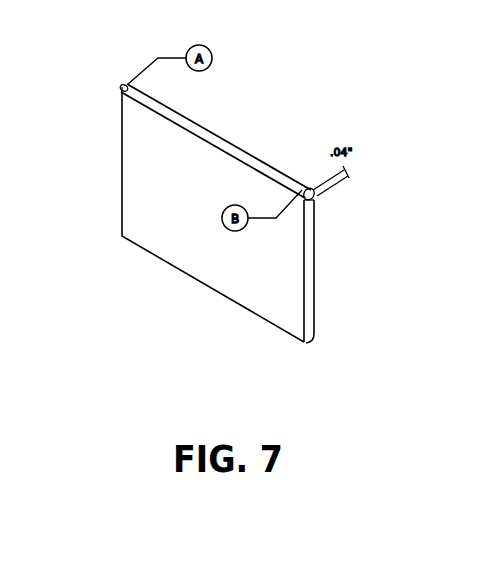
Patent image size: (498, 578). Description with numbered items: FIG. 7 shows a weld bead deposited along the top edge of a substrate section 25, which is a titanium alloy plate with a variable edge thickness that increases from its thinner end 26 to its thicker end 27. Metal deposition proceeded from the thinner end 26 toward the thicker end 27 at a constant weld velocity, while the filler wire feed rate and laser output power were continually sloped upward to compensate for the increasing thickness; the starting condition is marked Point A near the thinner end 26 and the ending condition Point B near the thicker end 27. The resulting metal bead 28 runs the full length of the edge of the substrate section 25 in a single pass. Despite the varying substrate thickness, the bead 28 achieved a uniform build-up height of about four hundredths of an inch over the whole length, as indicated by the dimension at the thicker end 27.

The substrate section 25 is at (140, 173).
The thinner end 26 is at (128, 101).
The thicker end 27 is at (310, 210).
The metal bead 28 is at (231, 146).